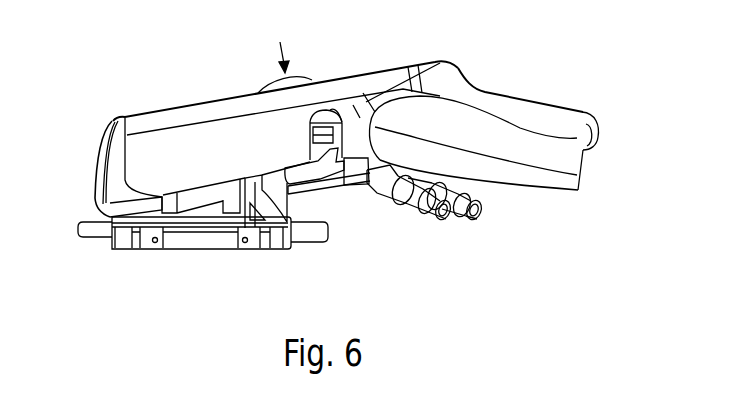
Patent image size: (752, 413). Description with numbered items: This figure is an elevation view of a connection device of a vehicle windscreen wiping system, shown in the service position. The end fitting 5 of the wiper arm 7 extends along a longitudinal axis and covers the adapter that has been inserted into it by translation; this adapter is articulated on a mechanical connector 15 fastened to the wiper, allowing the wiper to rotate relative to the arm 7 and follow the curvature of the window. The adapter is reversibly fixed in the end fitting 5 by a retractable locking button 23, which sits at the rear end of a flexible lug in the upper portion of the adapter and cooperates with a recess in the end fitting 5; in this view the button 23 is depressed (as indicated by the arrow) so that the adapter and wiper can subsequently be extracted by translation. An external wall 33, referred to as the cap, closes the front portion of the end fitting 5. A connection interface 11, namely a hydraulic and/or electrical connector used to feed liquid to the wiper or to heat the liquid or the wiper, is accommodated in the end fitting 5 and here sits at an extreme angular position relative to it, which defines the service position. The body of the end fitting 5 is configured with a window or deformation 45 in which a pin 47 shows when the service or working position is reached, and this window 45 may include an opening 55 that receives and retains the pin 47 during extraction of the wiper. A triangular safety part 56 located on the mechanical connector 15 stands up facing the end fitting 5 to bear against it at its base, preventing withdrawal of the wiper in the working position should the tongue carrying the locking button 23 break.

The end fitting 5 is at (205, 100).
The wiper arm 7 is at (538, 110).
The connection interface 11 is at (377, 194).
The mechanical connector 15 is at (197, 252).
The retractable locking button 23 is at (315, 78).
The external wall (cap) 33 is at (103, 153).
The window or deformation 45 is at (342, 120).
The pin 47 is at (318, 163).
The opening 55 is at (332, 184).
The safety part 56 is at (287, 233).